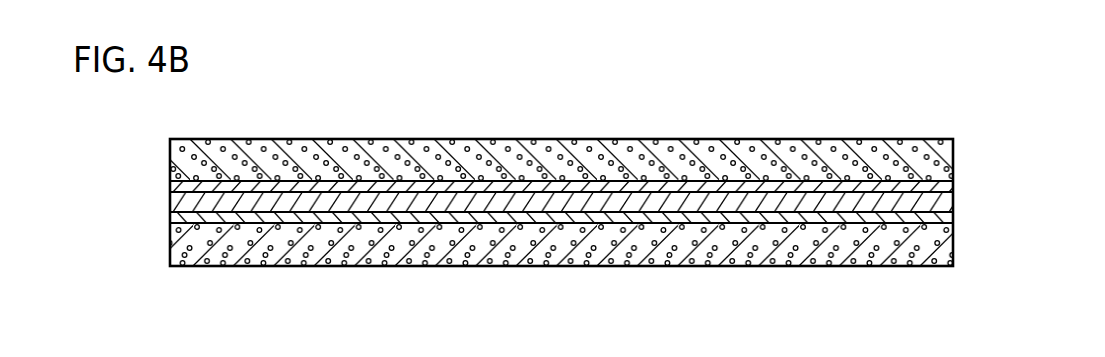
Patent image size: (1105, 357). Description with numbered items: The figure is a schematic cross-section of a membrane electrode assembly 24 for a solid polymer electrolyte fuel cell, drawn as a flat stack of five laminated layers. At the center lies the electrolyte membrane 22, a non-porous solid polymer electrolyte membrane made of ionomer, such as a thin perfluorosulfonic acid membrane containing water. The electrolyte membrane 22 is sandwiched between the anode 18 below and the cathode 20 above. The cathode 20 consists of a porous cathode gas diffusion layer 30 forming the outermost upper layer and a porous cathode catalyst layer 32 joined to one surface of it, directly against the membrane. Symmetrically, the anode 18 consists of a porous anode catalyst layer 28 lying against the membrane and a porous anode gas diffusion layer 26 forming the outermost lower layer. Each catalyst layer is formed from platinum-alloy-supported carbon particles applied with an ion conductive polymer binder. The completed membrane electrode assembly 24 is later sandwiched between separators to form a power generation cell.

The membrane electrode assembly 24 is at (496, 124).
The electrolyte membrane 22 is at (831, 201).
The cathode 20 is at (1028, 131).
The anode 18 is at (1028, 212).
The cathode gas diffusion layer 30 is at (940, 153).
The cathode catalyst layer 32 is at (948, 188).
The anode catalyst layer 28 is at (938, 215).
The anode gas diffusion layer 26 is at (940, 252).